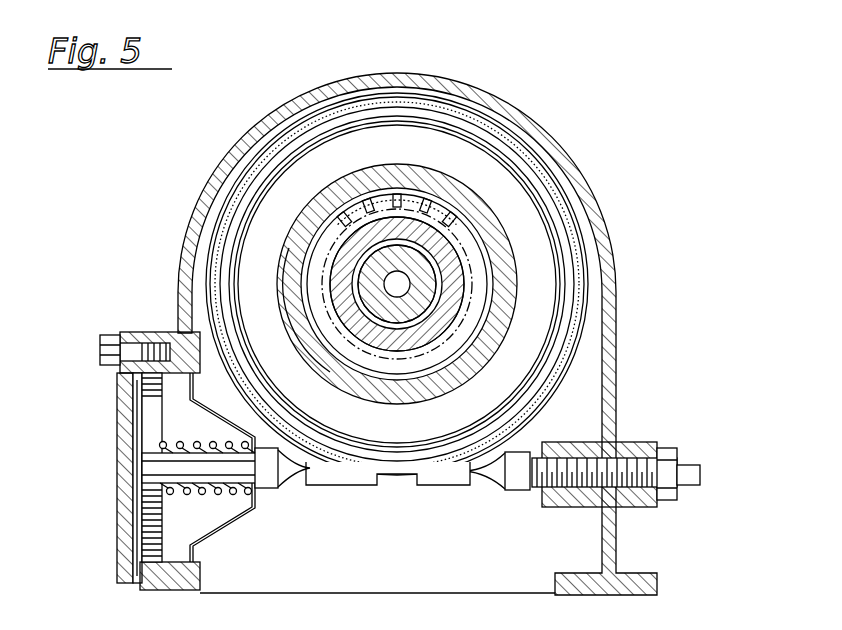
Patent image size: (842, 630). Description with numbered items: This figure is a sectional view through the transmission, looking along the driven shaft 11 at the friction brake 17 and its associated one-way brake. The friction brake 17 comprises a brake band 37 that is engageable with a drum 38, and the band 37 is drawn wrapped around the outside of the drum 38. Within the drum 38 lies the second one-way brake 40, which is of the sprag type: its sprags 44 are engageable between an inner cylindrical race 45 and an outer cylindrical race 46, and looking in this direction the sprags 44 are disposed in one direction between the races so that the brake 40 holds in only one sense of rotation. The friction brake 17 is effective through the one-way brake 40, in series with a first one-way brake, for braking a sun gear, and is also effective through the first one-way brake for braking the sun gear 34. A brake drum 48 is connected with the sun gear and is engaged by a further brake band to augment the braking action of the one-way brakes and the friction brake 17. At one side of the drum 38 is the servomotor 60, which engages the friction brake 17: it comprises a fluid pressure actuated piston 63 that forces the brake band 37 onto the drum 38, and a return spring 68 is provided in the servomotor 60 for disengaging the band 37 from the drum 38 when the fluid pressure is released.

The driven shaft 11 is at (389, 258).
The friction brake 17 is at (596, 278).
The sun gear 34 is at (340, 252).
The brake band 37 is at (565, 208).
The drum 38 is at (512, 148).
The second one-way brake 40 is at (416, 195).
The sprags 44 is at (347, 222).
The inner cylindrical race 45 is at (468, 257).
The outer cylindrical race 46 is at (458, 238).
The brake drum 48 is at (290, 310).
The servomotor 60 is at (174, 461).
The piston 63 is at (148, 520).
The return spring 68 is at (181, 443).